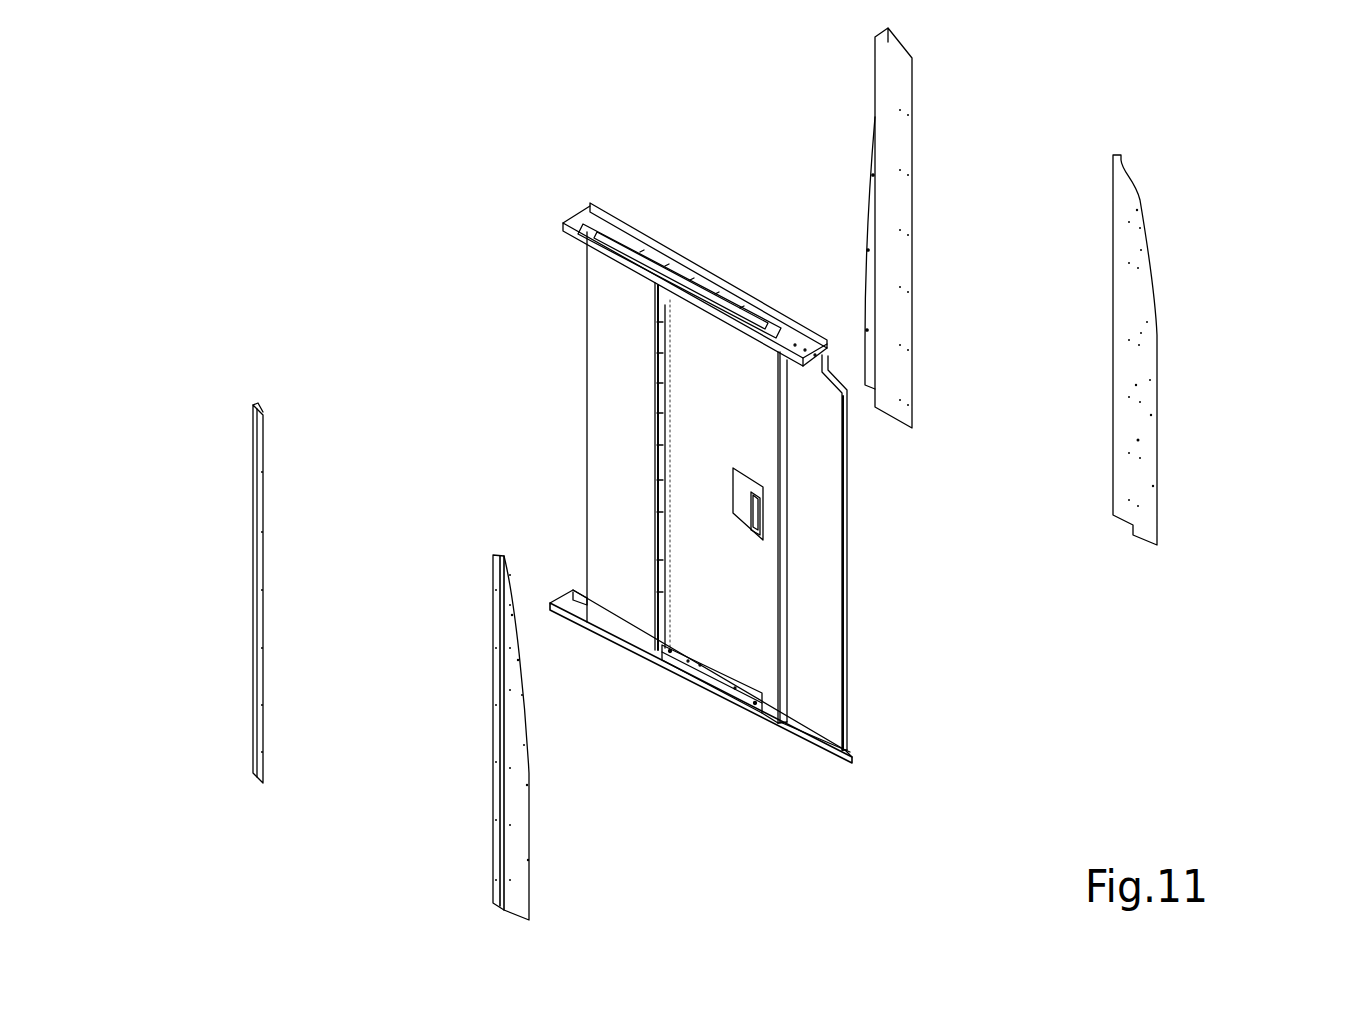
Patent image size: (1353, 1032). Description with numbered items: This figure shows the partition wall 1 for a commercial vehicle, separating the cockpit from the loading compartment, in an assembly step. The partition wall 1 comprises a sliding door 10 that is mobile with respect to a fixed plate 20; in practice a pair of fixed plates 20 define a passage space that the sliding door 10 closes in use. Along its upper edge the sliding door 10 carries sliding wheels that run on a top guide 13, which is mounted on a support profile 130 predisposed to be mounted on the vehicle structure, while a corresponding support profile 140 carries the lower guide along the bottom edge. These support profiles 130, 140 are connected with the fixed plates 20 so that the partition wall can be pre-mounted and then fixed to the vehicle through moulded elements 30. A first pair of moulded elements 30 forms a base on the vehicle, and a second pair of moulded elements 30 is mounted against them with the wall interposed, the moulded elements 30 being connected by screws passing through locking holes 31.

The partition wall 1 is at (565, 303).
The sliding door 10 is at (755, 577).
The top guide 13 is at (657, 266).
The support profile 130 is at (627, 206).
The support profile 140 is at (834, 778).
The fixed plate 20 is at (828, 669).
The moulded element 30 is at (885, 87).
The locking hole 31 is at (1152, 335).